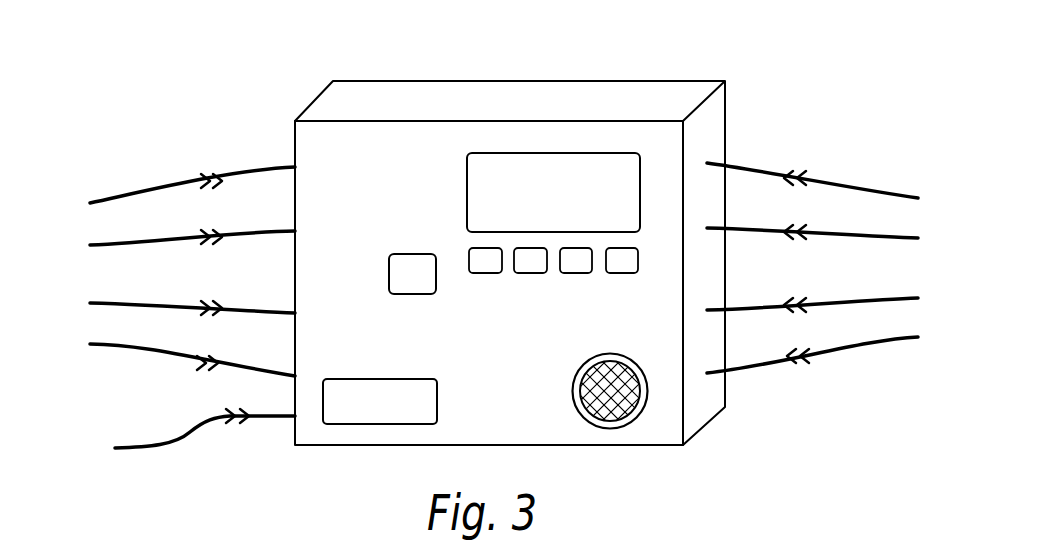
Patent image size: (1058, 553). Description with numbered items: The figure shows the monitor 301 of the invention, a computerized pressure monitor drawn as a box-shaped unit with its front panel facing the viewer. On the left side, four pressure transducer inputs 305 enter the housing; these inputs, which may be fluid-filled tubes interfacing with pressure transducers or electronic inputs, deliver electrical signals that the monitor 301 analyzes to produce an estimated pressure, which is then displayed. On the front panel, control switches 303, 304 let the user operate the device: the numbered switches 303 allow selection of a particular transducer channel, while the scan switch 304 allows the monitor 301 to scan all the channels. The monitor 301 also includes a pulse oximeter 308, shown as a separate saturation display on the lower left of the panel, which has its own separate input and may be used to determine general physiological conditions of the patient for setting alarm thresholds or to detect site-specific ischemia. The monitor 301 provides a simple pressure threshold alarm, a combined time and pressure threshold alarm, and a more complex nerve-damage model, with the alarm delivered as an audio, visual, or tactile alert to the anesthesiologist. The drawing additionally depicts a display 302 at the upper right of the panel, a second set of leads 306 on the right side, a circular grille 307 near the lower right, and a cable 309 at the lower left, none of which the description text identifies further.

The monitor 301 is at (528, 397).
The depth display 302 is at (597, 160).
The control switch 303 is at (622, 273).
The control switch 304 is at (410, 260).
The pressure transducer inputs 305 is at (114, 342).
The output leads 306 is at (887, 332).
The speaker 307 is at (613, 428).
The pulse oximeter 308 is at (368, 424).
The power cable 309 is at (158, 442).